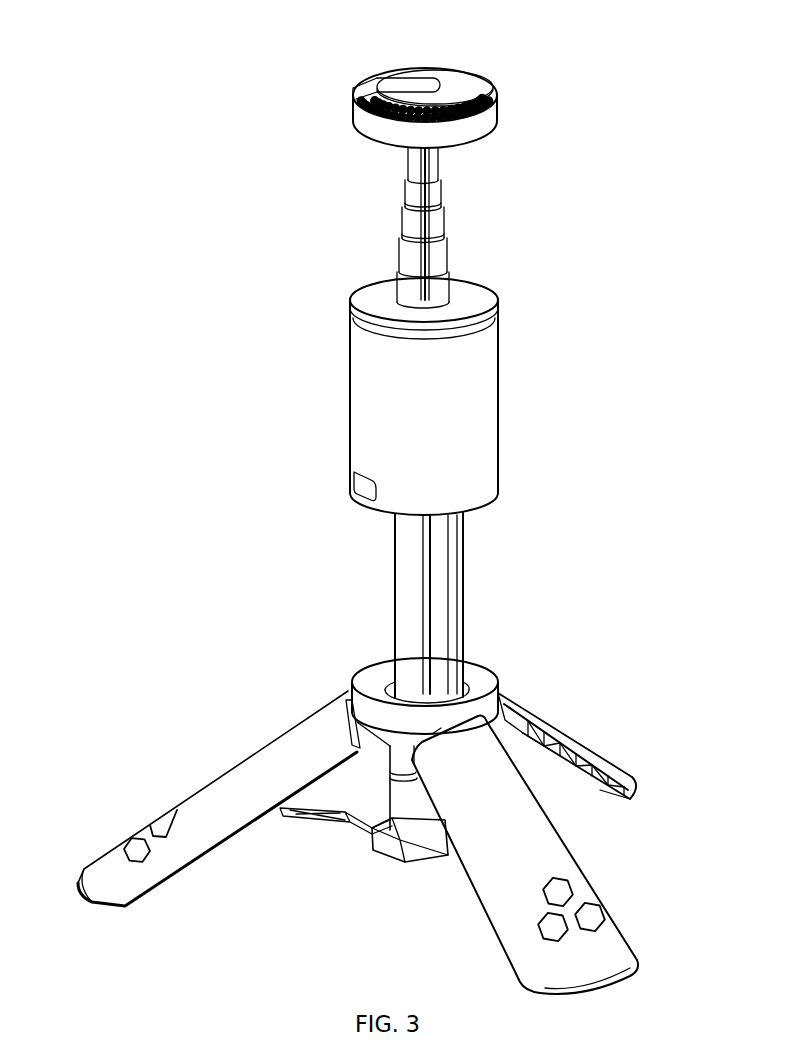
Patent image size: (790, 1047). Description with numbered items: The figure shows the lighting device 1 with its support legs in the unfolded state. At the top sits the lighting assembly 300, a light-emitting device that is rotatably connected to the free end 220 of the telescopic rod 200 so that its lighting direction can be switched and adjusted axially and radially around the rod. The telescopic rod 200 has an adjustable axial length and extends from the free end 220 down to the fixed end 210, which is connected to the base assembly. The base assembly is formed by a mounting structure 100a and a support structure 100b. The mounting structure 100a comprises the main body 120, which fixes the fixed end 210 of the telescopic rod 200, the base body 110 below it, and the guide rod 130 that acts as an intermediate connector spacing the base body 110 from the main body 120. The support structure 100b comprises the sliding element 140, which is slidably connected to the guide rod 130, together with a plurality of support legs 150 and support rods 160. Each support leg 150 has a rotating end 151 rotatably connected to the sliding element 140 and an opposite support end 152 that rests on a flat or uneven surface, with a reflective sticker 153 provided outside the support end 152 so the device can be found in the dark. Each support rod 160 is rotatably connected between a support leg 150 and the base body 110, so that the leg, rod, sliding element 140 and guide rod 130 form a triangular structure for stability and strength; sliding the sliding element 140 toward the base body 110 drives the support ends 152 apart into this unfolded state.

The lighting device 1 is at (262, 86).
The lighting assembly 300 is at (482, 120).
The telescopic rod 200 is at (426, 228).
The free end 220 is at (410, 155).
The fixed end 210 is at (403, 290).
The mounting structure 100a is at (476, 488).
The main body 120 is at (497, 387).
The guide rod 130 is at (459, 572).
The support structure 100b is at (371, 810).
The sliding element 140 is at (365, 664).
The base body 110 is at (392, 860).
The support rod 160 is at (318, 822).
The support leg 150 is at (265, 752).
The rotating end 151 is at (503, 694).
The support end 152 is at (626, 782).
The reflective sticker 153 is at (160, 820).